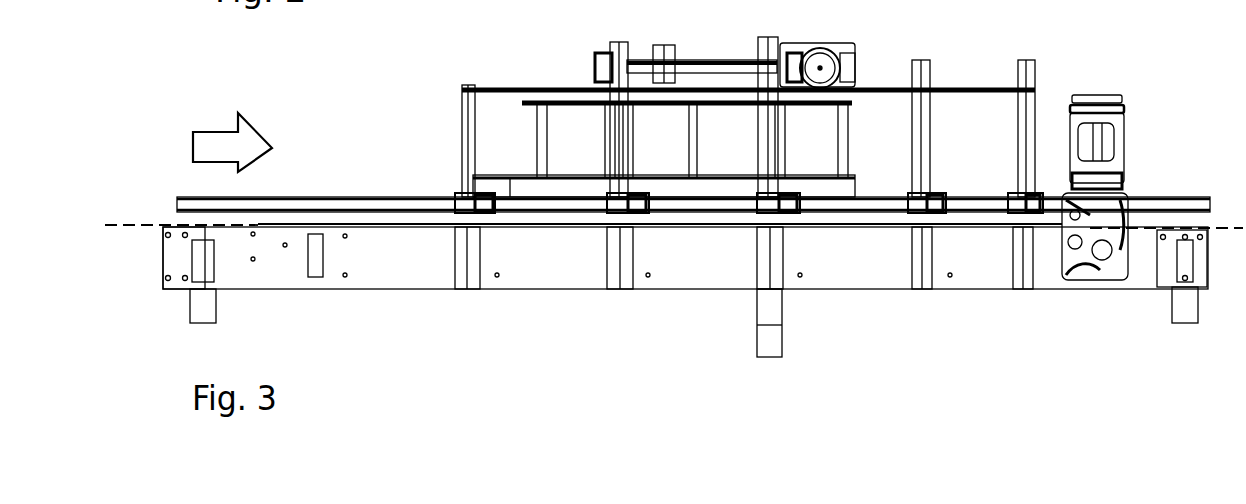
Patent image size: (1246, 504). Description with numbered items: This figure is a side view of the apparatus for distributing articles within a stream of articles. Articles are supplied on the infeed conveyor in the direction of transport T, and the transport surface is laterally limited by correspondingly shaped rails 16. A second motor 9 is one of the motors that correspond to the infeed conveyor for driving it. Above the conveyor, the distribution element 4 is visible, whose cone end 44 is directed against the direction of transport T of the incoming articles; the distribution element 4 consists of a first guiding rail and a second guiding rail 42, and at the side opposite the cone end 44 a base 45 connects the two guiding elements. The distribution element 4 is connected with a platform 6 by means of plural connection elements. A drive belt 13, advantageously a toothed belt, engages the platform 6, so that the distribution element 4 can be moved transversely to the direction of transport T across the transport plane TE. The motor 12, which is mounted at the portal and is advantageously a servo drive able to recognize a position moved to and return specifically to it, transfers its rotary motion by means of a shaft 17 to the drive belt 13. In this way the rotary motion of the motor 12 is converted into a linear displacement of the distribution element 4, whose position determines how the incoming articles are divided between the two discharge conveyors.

The distribution element 4 is at (748, 117).
The platform 6 is at (571, 100).
The second motor 9 is at (1112, 167).
The motor 12 is at (824, 60).
The drive belt 13 is at (666, 58).
The rails 16 is at (375, 203).
The shaft 17 is at (758, 62).
The second guiding rail 42 is at (680, 190).
The cone end 44 is at (460, 178).
The base 45 is at (518, 168).
The direction of transport T is at (216, 137).
The transport plane TE is at (132, 226).